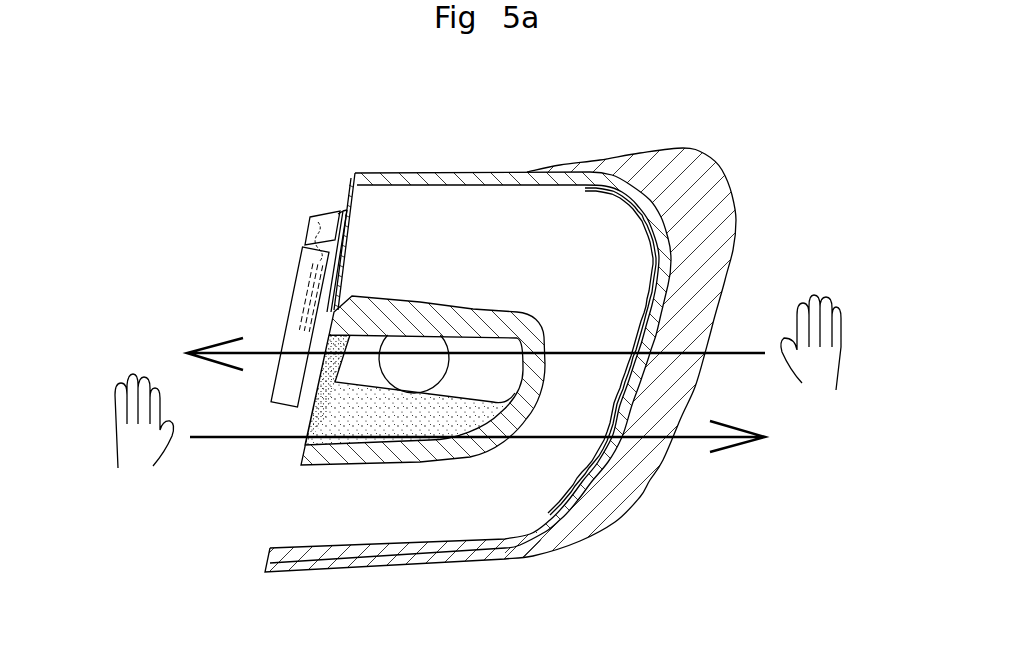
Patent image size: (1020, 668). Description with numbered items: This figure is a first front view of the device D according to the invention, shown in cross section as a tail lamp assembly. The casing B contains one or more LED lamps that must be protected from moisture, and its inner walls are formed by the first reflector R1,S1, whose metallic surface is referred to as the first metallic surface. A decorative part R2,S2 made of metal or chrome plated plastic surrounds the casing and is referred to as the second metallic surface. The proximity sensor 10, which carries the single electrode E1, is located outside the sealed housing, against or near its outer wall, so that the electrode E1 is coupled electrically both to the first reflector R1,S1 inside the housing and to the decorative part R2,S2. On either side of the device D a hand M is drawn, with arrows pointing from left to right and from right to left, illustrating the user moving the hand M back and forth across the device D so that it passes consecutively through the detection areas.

The proximity sensor 10 is at (293, 302).
The single electrode E1 is at (337, 210).
The first reflector / first metallic surface R1,S1 is at (450, 320).
The decorative part / second metallic surface R2,S2 is at (698, 187).
The device D is at (645, 125).
The casing B is at (402, 420).
The hand M is at (102, 382).